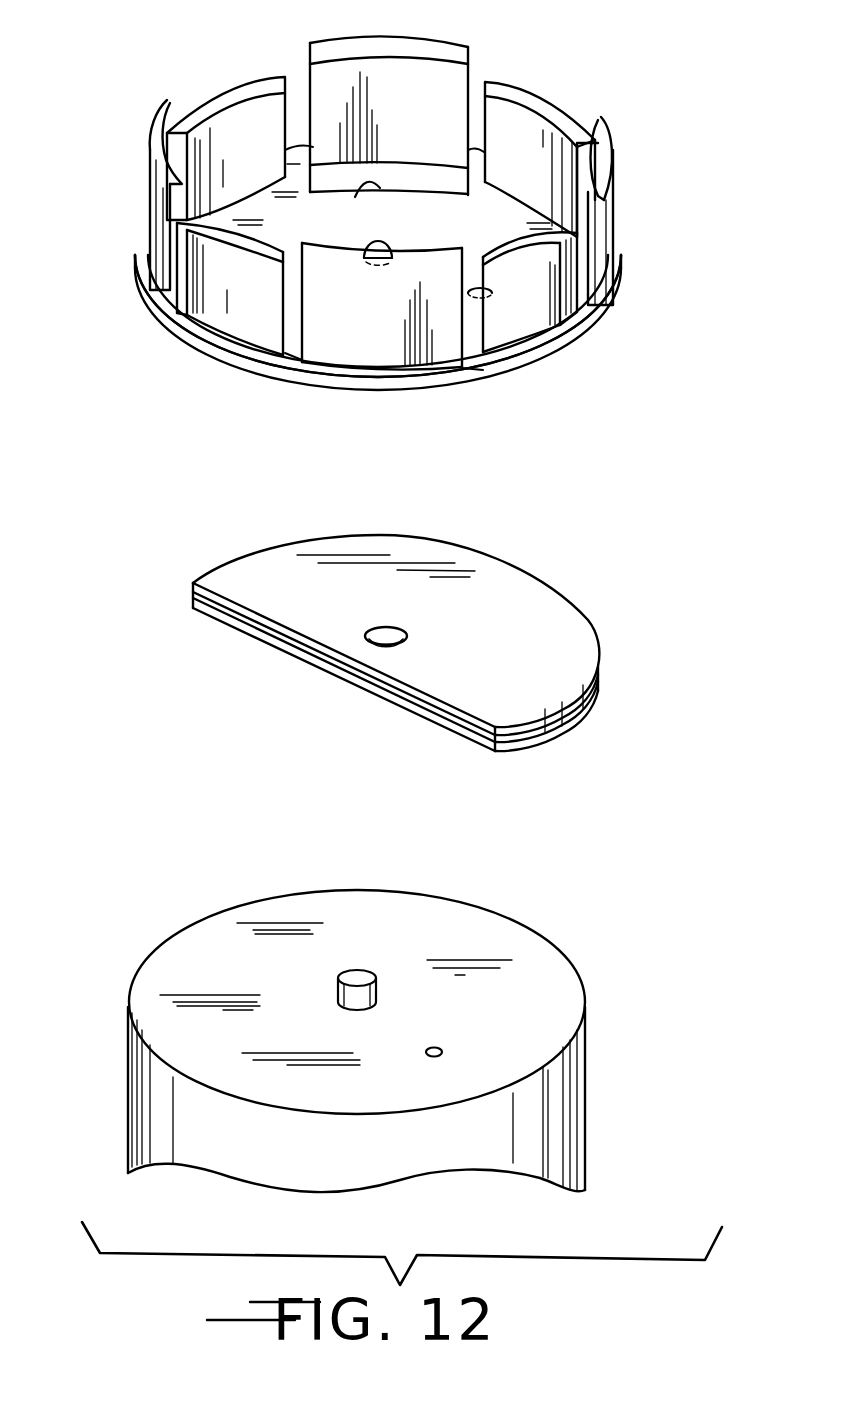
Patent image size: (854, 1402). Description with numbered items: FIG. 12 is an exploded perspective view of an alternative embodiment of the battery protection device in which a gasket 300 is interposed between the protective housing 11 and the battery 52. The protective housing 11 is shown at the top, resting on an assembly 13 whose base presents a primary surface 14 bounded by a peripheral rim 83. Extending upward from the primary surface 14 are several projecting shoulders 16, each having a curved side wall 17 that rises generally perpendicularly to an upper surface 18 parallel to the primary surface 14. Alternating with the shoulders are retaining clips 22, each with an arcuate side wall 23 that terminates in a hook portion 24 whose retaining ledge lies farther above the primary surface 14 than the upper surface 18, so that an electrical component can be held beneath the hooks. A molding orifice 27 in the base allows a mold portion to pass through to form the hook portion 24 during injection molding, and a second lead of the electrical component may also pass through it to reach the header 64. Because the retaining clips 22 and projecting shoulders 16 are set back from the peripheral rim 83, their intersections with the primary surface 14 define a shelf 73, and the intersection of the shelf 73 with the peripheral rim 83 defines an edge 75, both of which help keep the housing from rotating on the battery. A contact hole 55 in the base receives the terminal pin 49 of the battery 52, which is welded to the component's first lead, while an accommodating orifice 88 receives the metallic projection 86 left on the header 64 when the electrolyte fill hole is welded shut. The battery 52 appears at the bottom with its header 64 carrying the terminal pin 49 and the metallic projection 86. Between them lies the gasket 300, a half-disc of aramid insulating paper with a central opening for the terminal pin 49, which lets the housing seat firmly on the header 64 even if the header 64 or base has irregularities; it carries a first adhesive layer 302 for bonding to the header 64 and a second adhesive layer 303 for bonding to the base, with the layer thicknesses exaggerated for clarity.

The protective housing 11 is at (624, 132).
The base assembly 13 is at (626, 310).
The primary surface 14 is at (283, 230).
The projecting shoulder 16 is at (268, 161).
The curved side wall 17 is at (267, 110).
The upper surface 18 is at (233, 97).
The retaining clip 22 is at (435, 117).
The arcuate side wall 23 is at (450, 78).
The hook portion 24 is at (165, 110).
The molding orifice 27 is at (380, 188).
The terminal pin 49 is at (357, 975).
The battery 52 is at (370, 1157).
The contact hole 55 is at (368, 252).
The header 64 is at (188, 953).
The shelf 73 is at (200, 330).
The edge 75 is at (530, 347).
The peripheral rim 83 is at (253, 362).
The metallic projection 86 is at (442, 1050).
The accommodating orifice 88 is at (475, 290).
The gasket 300 is at (566, 713).
The first adhesive layer 302 is at (535, 731).
The second adhesive layer 303 is at (562, 613).